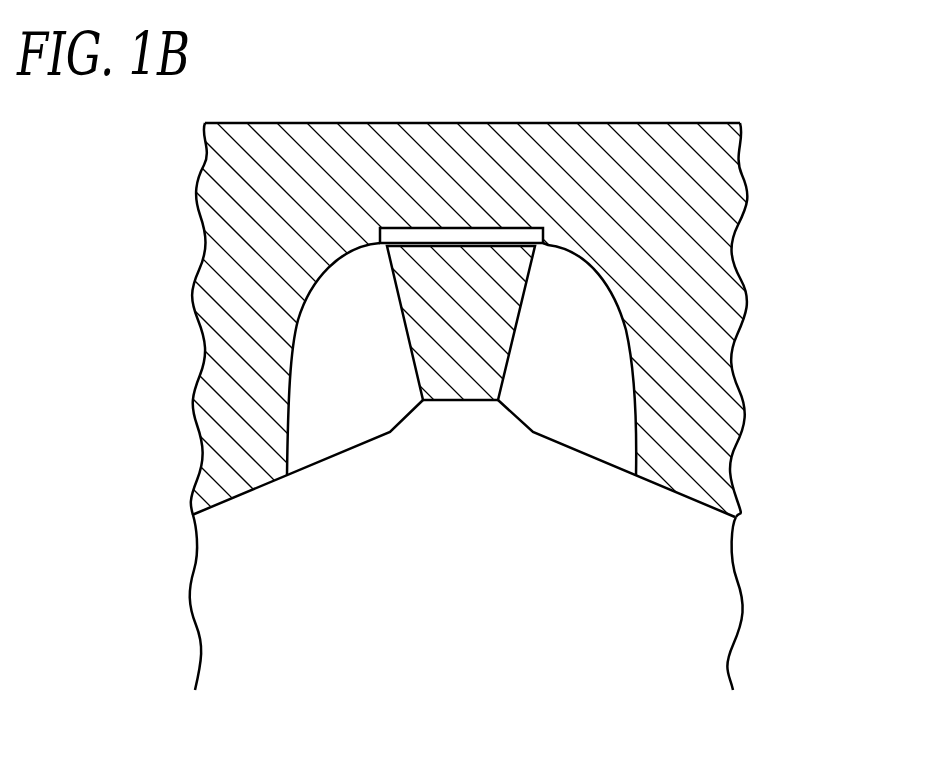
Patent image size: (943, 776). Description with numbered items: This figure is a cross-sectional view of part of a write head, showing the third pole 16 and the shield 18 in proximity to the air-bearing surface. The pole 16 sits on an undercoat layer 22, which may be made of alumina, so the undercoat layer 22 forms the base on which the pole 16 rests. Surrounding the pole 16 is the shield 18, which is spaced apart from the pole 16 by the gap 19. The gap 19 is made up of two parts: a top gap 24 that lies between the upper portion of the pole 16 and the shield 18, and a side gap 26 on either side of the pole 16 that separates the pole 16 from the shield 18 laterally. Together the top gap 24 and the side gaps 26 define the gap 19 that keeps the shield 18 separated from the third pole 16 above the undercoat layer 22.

The third pole 16 is at (470, 298).
The shield 18 is at (673, 160).
The gap 19 is at (444, 352).
The undercoat layer 22 is at (667, 550).
The top gap 24 is at (420, 236).
The side gap 26 is at (313, 375).